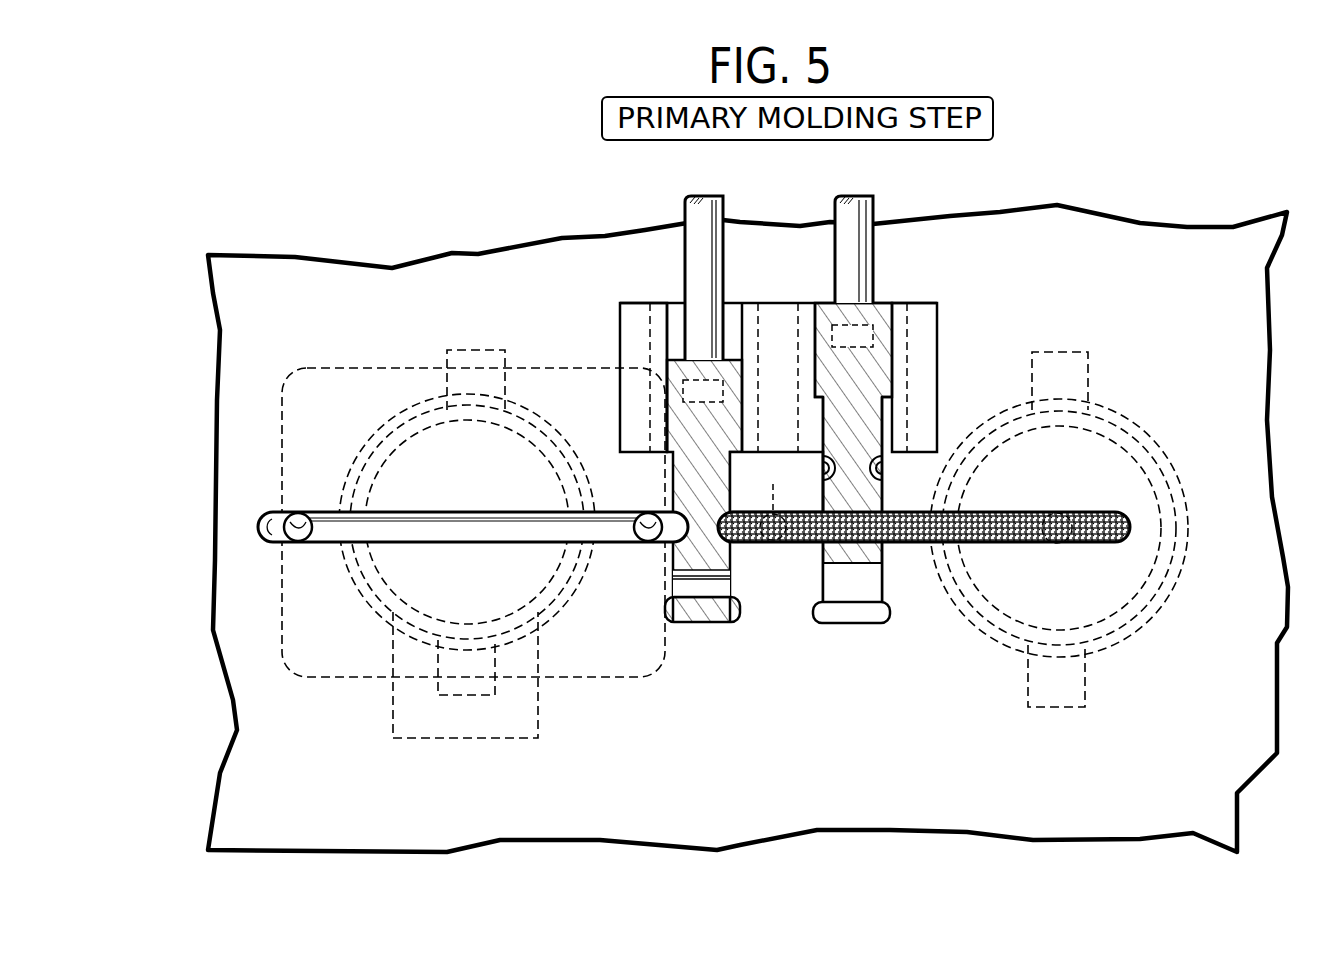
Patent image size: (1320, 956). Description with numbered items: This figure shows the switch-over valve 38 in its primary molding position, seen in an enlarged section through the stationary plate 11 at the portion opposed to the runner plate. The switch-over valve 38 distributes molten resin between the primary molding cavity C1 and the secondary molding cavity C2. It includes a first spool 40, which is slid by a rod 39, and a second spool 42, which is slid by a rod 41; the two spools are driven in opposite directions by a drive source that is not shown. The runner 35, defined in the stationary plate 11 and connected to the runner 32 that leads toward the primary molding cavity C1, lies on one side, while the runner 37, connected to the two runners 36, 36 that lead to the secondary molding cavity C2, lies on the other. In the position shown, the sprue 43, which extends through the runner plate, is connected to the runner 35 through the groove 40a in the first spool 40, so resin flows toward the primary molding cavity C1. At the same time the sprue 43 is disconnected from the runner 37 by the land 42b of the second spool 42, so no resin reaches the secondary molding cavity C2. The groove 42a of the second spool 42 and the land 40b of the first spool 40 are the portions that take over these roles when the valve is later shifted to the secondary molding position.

The stationary plate 11 is at (1152, 303).
The runner 32 is at (1062, 546).
The runner 35 is at (1013, 530).
The runners 36 is at (298, 542).
The runner 37 is at (402, 529).
The switch-over valve 38 is at (921, 289).
The rod 39 is at (850, 257).
The first spool 40 is at (874, 489).
The groove 40a is at (866, 541).
The land 40b is at (853, 472).
The rod 41 is at (695, 255).
The second spool 42 is at (736, 488).
The groove 42a is at (688, 592).
The land 42b is at (710, 530).
The sprue 43 is at (776, 482).
The primary molding cavity C1 is at (960, 604).
The secondary molding cavity C2 is at (363, 592).